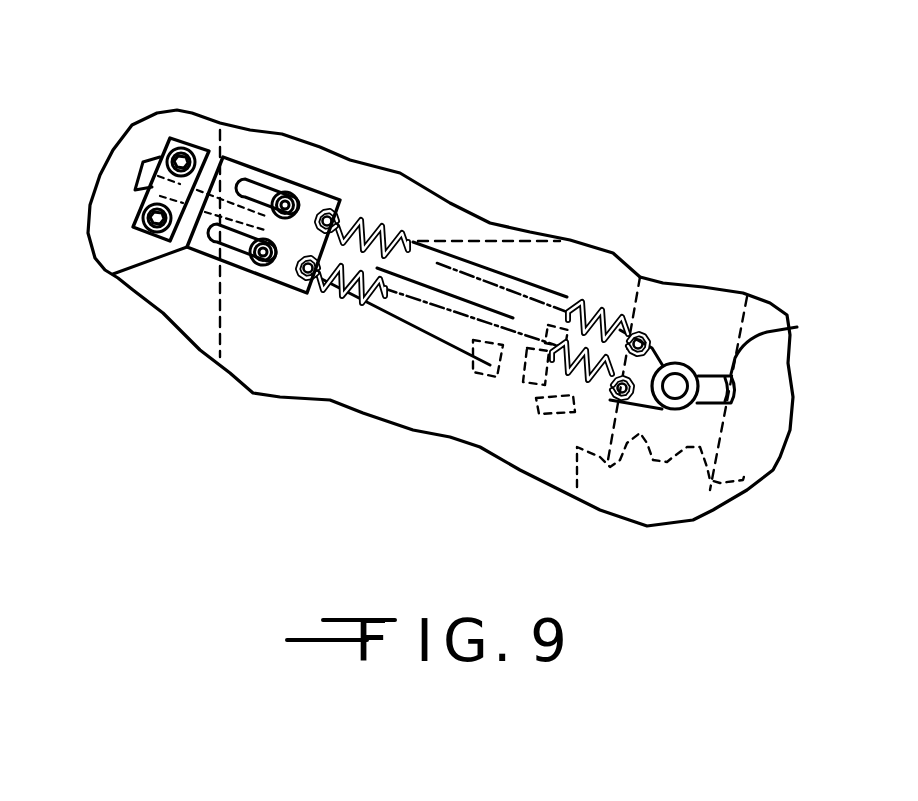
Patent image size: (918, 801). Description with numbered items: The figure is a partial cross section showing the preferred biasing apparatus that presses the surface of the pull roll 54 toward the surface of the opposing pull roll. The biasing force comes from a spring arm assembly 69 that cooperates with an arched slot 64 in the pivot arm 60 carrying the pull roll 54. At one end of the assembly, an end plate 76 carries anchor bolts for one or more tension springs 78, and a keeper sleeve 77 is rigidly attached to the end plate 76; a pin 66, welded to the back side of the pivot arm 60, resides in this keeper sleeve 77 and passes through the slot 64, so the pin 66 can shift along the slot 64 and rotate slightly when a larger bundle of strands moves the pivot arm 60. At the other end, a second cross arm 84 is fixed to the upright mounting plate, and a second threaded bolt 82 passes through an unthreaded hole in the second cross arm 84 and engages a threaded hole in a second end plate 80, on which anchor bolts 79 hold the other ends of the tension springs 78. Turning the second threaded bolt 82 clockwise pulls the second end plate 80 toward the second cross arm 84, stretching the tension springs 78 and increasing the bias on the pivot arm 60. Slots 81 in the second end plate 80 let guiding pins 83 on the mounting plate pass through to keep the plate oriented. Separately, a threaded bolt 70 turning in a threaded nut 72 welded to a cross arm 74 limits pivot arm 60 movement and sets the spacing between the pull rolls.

The pull roll 54 is at (672, 507).
The pivot arm 60 is at (708, 423).
The slot 64 is at (797, 327).
The pin 66 is at (723, 290).
The spring arm assembly 69 is at (484, 268).
The threaded bolt 70 is at (478, 371).
The threaded nut 72 is at (527, 390).
The cross arm 74 is at (560, 398).
The end plate 76 is at (676, 362).
The keeper sleeve 77 is at (677, 386).
The tension springs 78 is at (384, 245).
The anchor bolts 79 is at (330, 214).
The second end plate 80 is at (307, 197).
The slots 81 is at (247, 187).
The second threaded bolt 82 is at (138, 157).
The guiding pins 83 is at (283, 195).
The second cross arm 84 is at (180, 138).